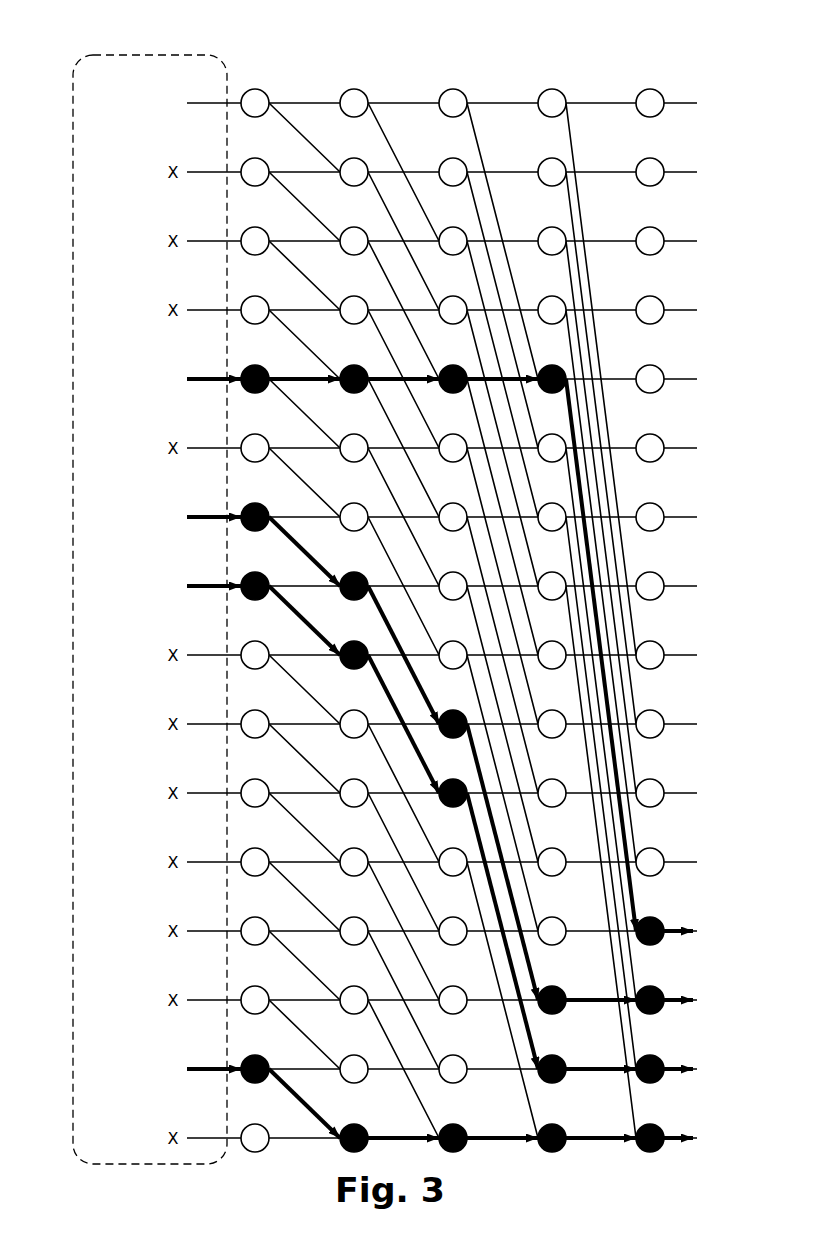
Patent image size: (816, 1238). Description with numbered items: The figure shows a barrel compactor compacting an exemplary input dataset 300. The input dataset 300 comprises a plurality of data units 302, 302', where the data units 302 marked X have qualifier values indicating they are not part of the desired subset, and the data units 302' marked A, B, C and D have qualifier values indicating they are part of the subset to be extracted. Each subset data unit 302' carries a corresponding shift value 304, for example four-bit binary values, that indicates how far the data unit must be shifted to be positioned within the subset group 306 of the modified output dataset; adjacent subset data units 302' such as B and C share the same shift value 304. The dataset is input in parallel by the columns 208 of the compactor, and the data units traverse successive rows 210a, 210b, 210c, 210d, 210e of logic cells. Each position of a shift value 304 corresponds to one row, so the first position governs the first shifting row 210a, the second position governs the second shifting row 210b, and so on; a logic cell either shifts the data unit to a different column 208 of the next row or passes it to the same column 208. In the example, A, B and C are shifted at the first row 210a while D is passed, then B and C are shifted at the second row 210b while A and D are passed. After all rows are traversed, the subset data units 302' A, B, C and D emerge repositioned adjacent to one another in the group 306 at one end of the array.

The input dataset 300 is at (73, 130).
The data unit 302 is at (141, 88).
The data unit 302' is at (172, 710).
The shift value 304 is at (210, 1101).
The column 208 is at (700, 87).
The first shifting row 210a is at (241, 85).
The second shifting row 210b is at (340, 85).
The third shifting row 210c is at (439, 85).
The fourth shifting row 210d is at (538, 85).
The fifth row 210e is at (636, 85).
The subset group 306 is at (712, 900).